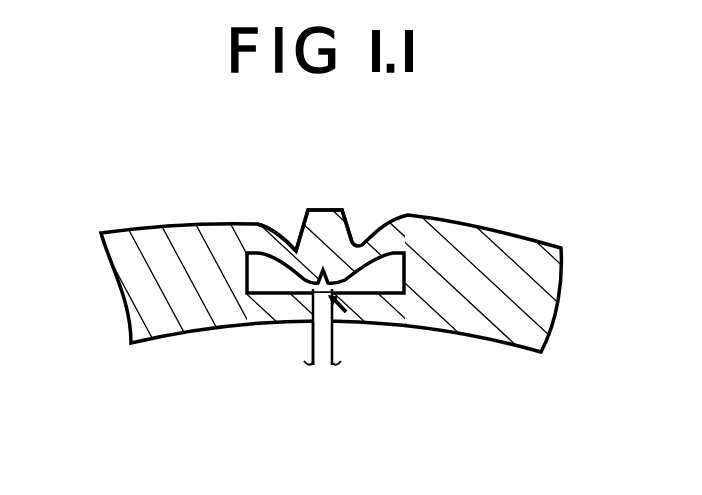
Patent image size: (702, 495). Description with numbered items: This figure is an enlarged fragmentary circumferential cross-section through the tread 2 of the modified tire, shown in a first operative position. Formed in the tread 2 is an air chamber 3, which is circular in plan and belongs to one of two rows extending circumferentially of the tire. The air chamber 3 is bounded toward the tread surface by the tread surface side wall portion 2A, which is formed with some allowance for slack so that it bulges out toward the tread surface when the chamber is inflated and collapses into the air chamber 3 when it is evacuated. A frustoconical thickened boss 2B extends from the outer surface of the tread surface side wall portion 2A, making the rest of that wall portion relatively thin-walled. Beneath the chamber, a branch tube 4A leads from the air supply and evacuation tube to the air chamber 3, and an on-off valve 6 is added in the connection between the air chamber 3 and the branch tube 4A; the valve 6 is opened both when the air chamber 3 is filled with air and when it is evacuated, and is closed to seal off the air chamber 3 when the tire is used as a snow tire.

The tread 2 is at (460, 247).
The tread surface side wall portion 2A is at (258, 226).
The frustoconical thickened boss 2B is at (323, 223).
The air chamber 3 is at (383, 273).
The branch tube 4A is at (313, 330).
The on-off valve 6 is at (322, 366).